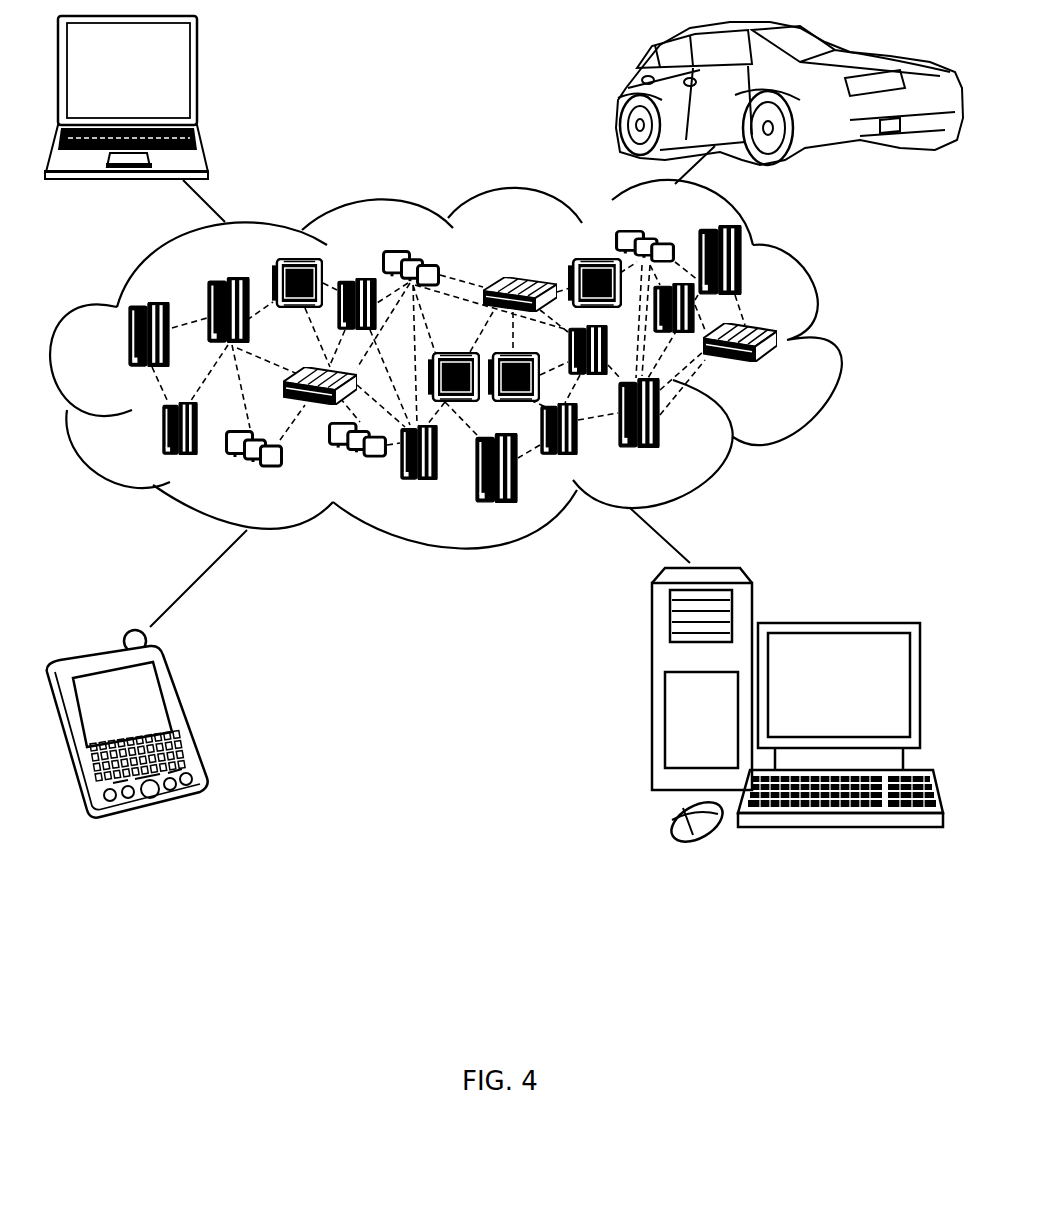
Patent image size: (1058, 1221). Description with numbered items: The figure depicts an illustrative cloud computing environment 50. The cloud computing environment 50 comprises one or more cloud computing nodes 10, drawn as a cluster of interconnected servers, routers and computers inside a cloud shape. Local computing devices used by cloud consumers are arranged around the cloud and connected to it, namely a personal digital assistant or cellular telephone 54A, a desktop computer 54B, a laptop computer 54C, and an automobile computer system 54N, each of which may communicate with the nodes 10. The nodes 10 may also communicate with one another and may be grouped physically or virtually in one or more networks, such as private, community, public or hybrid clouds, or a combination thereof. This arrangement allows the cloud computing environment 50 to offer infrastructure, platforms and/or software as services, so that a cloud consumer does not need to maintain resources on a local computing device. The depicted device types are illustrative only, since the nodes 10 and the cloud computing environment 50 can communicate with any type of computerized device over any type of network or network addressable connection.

The cloud computing environment 50 is at (835, 345).
The cloud computing nodes 10 is at (784, 374).
The personal digital assistant or cellular telephone 54A is at (183, 717).
The desktop computer 54B is at (837, 623).
The laptop computer 54C is at (197, 78).
The automobile computer system 54N is at (620, 96).